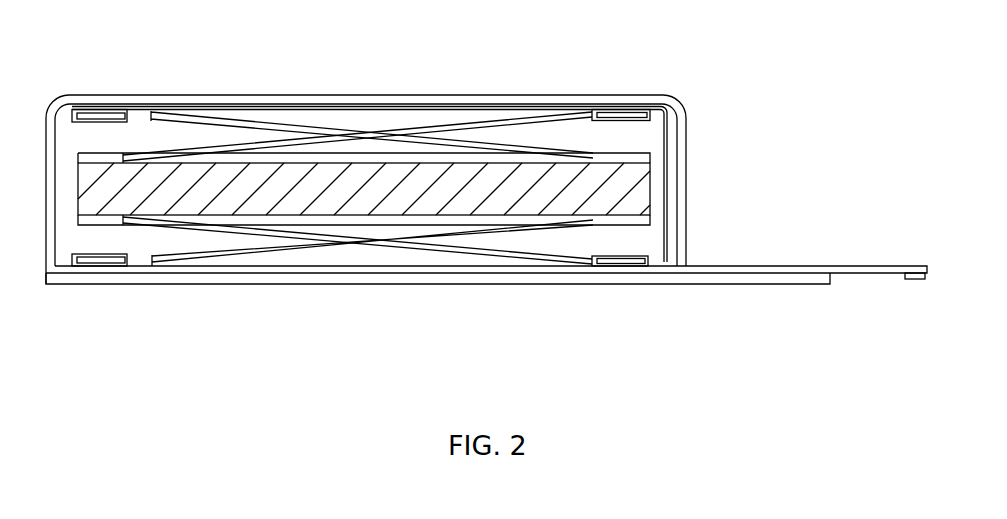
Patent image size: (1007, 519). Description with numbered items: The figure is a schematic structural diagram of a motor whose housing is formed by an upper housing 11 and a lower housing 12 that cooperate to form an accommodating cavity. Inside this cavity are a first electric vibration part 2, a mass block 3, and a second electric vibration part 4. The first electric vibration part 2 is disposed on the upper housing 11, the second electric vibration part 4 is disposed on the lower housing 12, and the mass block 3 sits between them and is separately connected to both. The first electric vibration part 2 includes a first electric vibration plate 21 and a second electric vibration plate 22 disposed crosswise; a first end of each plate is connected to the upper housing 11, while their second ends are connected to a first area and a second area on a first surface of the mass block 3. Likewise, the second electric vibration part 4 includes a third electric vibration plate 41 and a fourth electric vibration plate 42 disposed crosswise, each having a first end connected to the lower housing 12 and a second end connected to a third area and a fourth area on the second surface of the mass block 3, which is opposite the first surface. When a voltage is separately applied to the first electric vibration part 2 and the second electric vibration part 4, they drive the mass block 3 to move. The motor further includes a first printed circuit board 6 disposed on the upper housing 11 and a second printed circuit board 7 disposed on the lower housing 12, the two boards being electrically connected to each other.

The upper housing 11 is at (140, 95).
The lower housing 12 is at (300, 283).
The first electric vibration part 2 is at (443, 147).
The first electric vibration plate 21 is at (565, 105).
The second electric vibration plate 22 is at (593, 153).
The first printed circuit board 6 is at (347, 110).
The second printed circuit board 7 is at (463, 273).
The mass block 3 is at (638, 200).
The second electric vibration part 4 is at (424, 303).
The third electric vibration plate 41 is at (590, 227).
The fourth electric vibration plate 42 is at (540, 258).